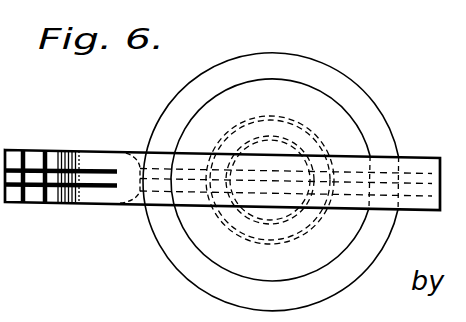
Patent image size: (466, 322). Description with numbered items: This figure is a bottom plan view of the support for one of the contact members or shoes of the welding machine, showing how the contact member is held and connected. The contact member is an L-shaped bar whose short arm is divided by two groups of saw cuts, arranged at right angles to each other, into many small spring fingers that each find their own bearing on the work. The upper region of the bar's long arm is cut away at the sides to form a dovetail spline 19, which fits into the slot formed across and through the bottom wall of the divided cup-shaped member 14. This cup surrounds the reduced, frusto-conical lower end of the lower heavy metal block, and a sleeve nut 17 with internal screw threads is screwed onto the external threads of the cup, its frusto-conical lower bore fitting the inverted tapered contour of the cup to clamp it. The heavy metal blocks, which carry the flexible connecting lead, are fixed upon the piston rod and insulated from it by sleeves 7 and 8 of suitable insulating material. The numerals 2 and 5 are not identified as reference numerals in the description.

The rod 2 is at (136, 149).
The knurled grip 5 is at (18, 153).
The sleeve 7 is at (306, 143).
The sleeve 8 is at (249, 119).
The divided cup-shaped member 14 is at (280, 90).
The sleeve nut 17 is at (371, 105).
The dovetail spline 19 is at (433, 157).